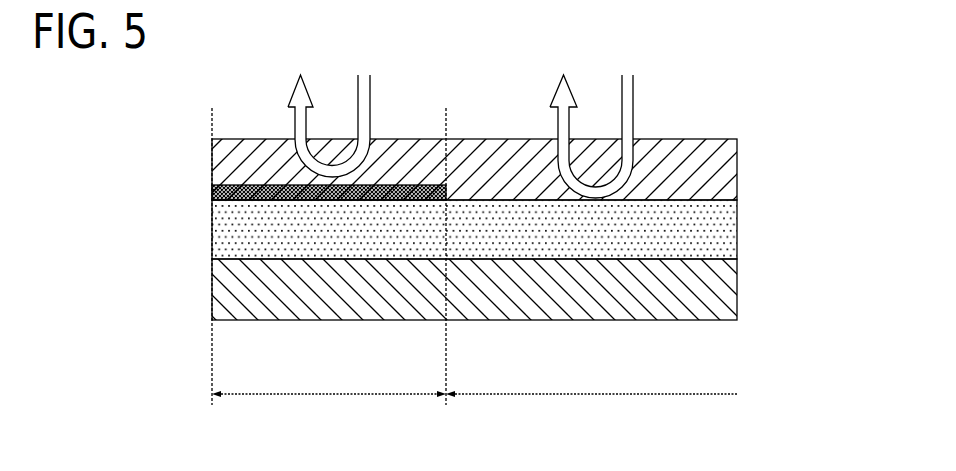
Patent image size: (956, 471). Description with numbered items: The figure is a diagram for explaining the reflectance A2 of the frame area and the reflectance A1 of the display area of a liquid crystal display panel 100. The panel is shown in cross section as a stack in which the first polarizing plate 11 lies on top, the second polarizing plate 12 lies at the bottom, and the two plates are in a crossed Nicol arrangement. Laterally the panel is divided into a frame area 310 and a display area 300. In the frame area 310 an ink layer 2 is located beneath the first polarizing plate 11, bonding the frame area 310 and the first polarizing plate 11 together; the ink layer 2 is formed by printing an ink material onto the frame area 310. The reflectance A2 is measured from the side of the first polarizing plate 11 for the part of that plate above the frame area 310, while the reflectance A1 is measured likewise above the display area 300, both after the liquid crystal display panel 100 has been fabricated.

The first polarizing plate 11 is at (713, 169).
The liquid crystal display panel 100 is at (713, 228).
The second polarizing plate 12 is at (713, 291).
The ink layer 2 is at (307, 186).
The frame area 310 is at (329, 411).
The display area 300 is at (592, 411).
The reflectance of display area A1 is at (597, 118).
The reflectance of frame area A2 is at (335, 107).